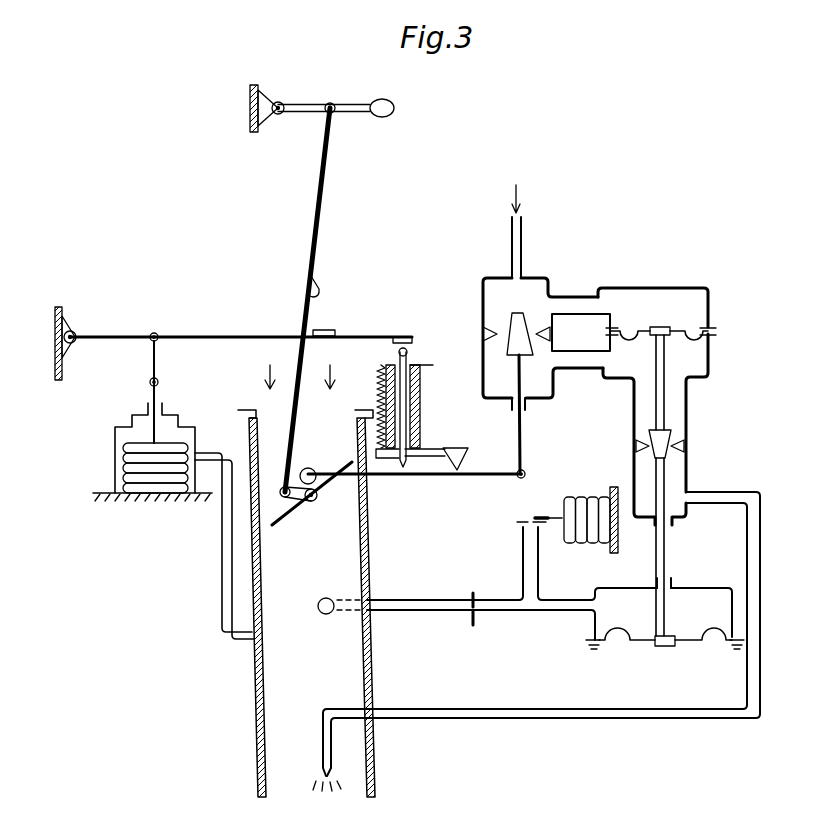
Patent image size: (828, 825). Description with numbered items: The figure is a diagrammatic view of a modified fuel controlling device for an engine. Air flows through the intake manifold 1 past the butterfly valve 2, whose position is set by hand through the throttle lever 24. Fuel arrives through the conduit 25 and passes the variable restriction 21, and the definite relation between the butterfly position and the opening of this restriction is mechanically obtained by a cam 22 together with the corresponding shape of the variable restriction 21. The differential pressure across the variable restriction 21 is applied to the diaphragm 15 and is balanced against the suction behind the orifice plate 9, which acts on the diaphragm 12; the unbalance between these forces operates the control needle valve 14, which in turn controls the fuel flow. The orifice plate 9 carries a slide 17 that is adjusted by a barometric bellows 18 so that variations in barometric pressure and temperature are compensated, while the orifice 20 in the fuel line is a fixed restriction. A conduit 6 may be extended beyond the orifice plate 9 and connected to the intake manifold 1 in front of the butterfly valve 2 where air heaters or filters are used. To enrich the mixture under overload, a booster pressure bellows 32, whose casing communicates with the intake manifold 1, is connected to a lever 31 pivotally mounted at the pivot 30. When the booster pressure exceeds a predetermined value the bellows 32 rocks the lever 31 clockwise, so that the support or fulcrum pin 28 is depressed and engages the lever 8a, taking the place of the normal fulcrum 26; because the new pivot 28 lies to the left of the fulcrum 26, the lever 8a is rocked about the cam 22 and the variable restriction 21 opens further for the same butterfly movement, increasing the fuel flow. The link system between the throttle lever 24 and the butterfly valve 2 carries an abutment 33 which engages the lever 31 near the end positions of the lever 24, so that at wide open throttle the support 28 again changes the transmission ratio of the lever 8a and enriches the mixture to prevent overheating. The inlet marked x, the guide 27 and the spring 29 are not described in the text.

The intake manifold 1 is at (257, 697).
The butterfly valve 2 is at (283, 521).
The conduit 6 is at (412, 606).
The lever 8a is at (470, 476).
The orifice plate 9 is at (521, 508).
The diaphragm 12 is at (692, 645).
The control needle valve 14 is at (662, 440).
The diaphragm 15 is at (672, 330).
The slide 17 is at (538, 515).
The barometric bellows 18 is at (583, 497).
The orifice 20 is at (477, 620).
The variable restriction 21 is at (510, 337).
The cam 22 is at (327, 484).
The throttle lever 24 is at (338, 118).
The conduit 25 is at (746, 535).
The fulcrum 26 is at (455, 452).
The guide 27 is at (423, 363).
The fulcrum pin 28 is at (403, 468).
The spring 29 is at (378, 398).
The pivot 30 is at (74, 345).
The lever 31 is at (355, 337).
The booster pressure bellows 32 is at (118, 463).
The abutment 33 is at (320, 285).
The inlet x is at (519, 222).